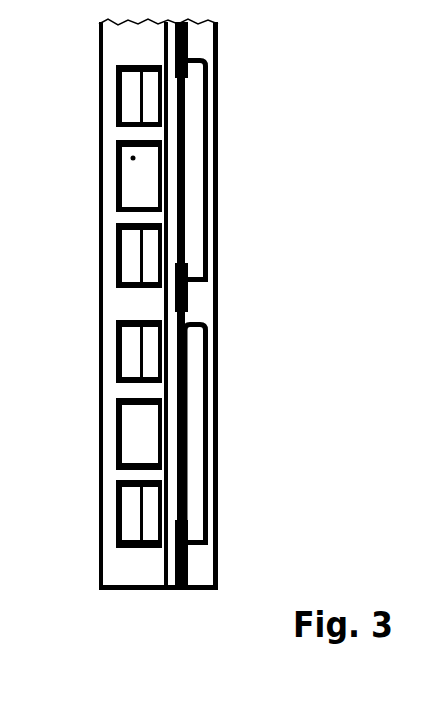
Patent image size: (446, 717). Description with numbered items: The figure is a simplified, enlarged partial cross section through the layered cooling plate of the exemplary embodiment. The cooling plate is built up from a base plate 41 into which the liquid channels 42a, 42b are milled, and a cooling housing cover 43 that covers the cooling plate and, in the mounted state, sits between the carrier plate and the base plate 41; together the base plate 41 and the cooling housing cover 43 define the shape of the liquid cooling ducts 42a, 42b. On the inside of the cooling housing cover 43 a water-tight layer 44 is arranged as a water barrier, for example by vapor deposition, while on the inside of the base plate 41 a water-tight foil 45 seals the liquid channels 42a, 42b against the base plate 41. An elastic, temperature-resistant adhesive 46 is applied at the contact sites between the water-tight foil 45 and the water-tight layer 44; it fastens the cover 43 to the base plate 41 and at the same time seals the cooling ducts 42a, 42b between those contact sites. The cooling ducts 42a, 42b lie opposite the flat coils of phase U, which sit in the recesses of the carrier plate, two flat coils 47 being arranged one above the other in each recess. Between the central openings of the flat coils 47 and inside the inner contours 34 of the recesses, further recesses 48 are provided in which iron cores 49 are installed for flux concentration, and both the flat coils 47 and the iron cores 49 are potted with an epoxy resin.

The inner contours 34 is at (118, 245).
The base plate 41 is at (218, 47).
The liquid channel 42a is at (197, 105).
The liquid channel 42b is at (208, 378).
The cooling housing cover 43 is at (170, 588).
The water-tight layer 44 is at (180, 420).
The water-tight foil 45 is at (208, 158).
The elastic, temperature-resistant adhesive 46 is at (190, 33).
The flat coils 47 is at (116, 175).
The further recesses 48 is at (116, 176).
The iron cores 49 is at (136, 160).